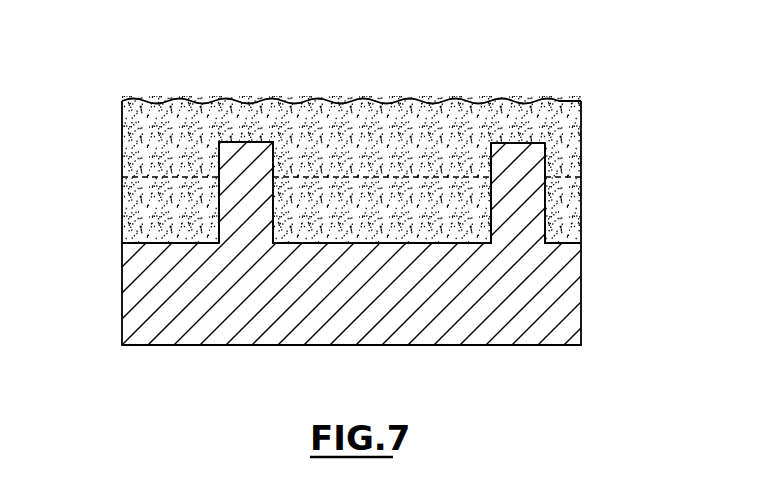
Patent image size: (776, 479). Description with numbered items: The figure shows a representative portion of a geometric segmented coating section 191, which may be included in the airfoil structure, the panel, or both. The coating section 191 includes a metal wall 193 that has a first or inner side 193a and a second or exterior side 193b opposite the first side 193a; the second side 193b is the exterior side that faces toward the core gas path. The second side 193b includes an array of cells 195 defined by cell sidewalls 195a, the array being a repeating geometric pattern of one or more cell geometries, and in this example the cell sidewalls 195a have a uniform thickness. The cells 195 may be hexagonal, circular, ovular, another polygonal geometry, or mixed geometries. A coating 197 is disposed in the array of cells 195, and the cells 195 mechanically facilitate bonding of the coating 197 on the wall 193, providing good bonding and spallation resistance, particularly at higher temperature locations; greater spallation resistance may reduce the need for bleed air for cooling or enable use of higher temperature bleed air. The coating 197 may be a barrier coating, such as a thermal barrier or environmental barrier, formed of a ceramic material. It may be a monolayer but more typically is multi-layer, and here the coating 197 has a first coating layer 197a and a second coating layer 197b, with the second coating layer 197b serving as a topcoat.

The geometric segmented coating section 191 is at (97, 288).
The metal wall 193 is at (205, 347).
The first or inner side 193a is at (477, 347).
The second or exterior side 193b is at (148, 241).
The cells 195 is at (372, 160).
The cell sidewalls 195a is at (276, 148).
The coating 197 is at (182, 138).
The first coating layer 197a is at (571, 208).
The second coating layer 197b is at (571, 143).